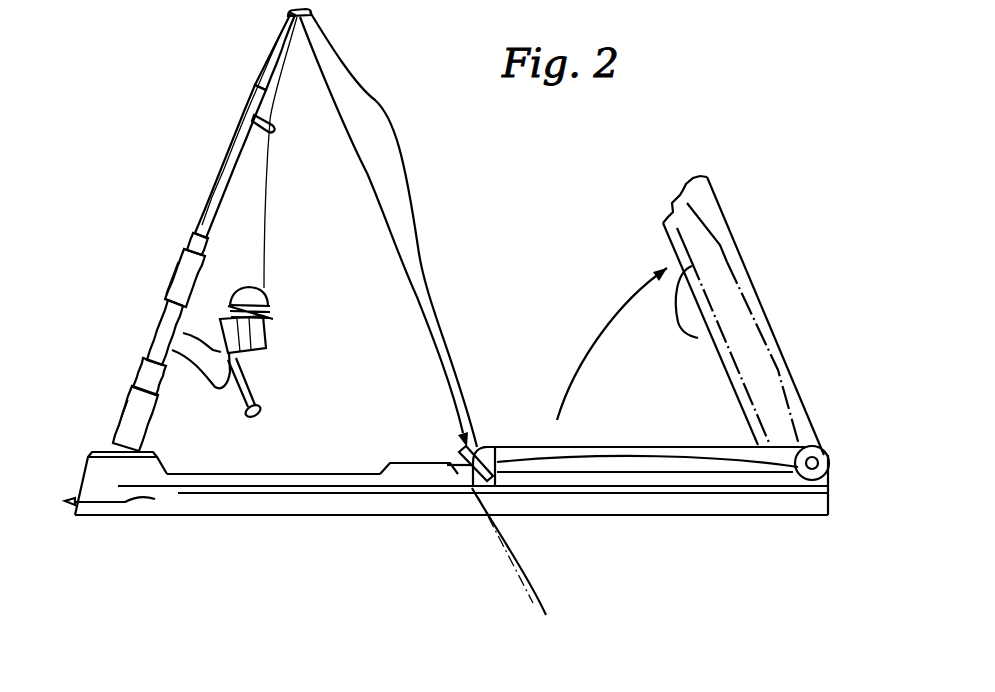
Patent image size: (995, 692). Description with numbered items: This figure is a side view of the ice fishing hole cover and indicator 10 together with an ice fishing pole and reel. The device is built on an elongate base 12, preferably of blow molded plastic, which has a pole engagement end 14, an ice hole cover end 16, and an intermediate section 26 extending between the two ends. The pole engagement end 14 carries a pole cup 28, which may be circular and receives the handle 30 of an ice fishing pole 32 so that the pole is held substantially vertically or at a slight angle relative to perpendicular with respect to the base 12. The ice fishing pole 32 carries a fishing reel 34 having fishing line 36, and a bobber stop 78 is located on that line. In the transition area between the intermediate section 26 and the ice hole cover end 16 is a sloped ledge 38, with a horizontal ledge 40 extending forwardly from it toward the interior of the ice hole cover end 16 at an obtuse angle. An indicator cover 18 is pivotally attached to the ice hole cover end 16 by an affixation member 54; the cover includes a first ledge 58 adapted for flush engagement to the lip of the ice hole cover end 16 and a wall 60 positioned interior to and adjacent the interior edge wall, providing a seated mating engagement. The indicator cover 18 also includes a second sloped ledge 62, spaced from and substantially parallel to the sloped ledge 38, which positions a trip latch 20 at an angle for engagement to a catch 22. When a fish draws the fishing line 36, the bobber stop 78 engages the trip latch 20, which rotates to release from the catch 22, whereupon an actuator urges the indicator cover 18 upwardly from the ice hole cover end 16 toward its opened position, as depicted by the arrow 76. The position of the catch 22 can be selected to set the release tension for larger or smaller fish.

The ice fishing hole cover and indicator 10 is at (546, 264).
The base 12 is at (278, 512).
The pole engagement end 14 is at (155, 499).
The ice hole cover end 16 is at (803, 507).
The indicator cover 18 is at (668, 446).
The trip latch 20 is at (503, 456).
The catch 22 is at (433, 463).
The intermediate section 26 is at (404, 495).
The pole cup 28 is at (80, 448).
The handle 30 is at (124, 413).
The ice fishing pole 32 is at (203, 214).
The fishing reel 34 is at (266, 344).
The fishing line 36 is at (436, 288).
The sloped ledge 38 is at (387, 463).
The horizontal ledge 40 is at (471, 490).
The affixation member 54 is at (826, 474).
The first ledge 58 is at (668, 218).
The wall 60 is at (697, 343).
The second sloped ledge 62 is at (530, 403).
The arrow 76 is at (578, 363).
The bobber stop 78 is at (465, 445).